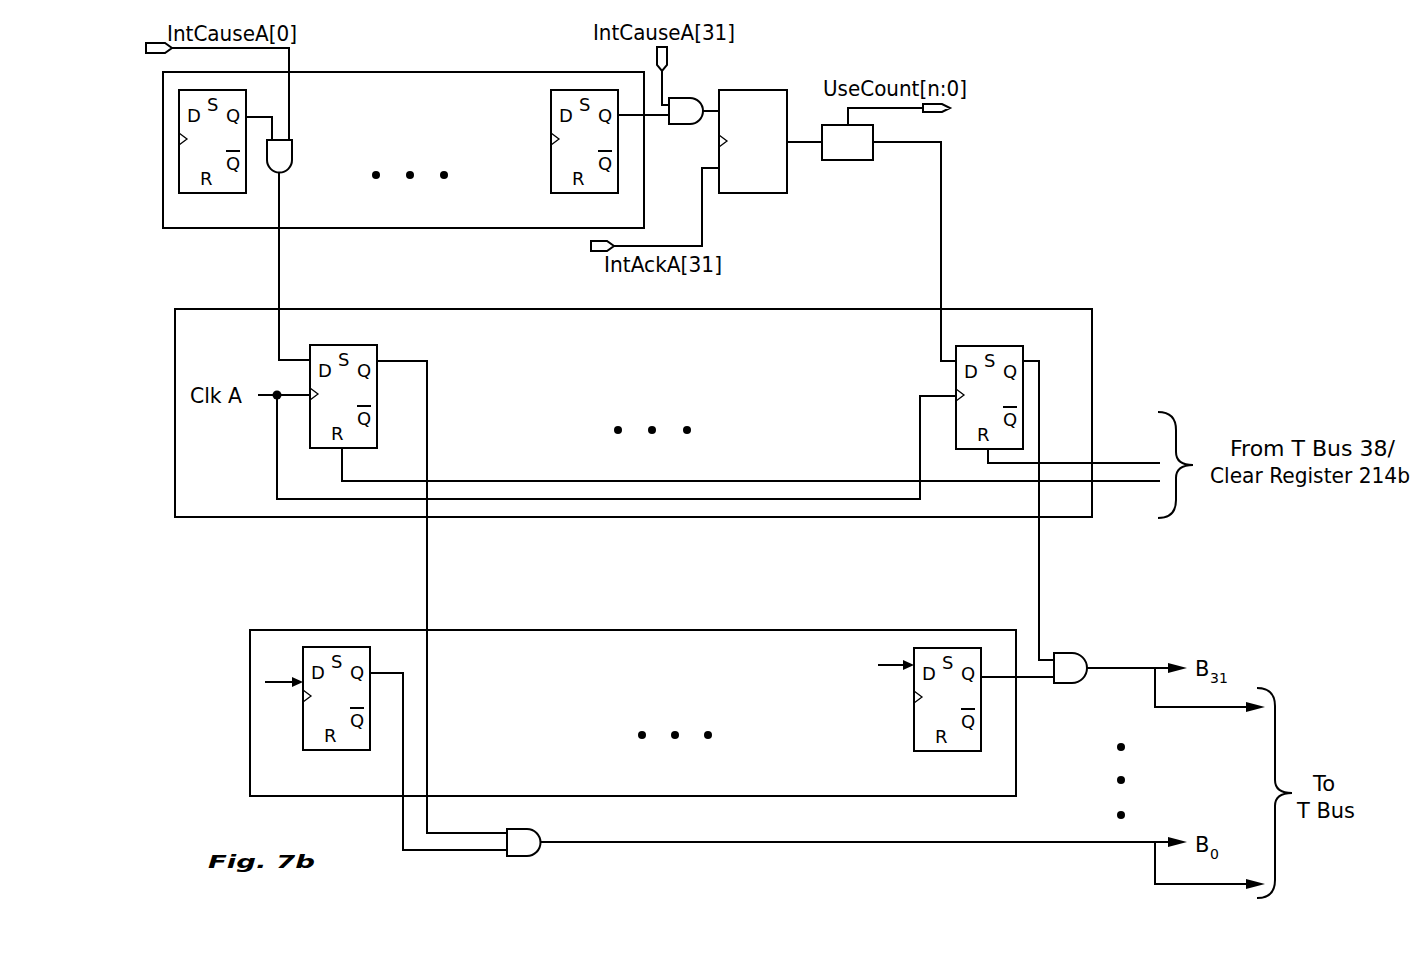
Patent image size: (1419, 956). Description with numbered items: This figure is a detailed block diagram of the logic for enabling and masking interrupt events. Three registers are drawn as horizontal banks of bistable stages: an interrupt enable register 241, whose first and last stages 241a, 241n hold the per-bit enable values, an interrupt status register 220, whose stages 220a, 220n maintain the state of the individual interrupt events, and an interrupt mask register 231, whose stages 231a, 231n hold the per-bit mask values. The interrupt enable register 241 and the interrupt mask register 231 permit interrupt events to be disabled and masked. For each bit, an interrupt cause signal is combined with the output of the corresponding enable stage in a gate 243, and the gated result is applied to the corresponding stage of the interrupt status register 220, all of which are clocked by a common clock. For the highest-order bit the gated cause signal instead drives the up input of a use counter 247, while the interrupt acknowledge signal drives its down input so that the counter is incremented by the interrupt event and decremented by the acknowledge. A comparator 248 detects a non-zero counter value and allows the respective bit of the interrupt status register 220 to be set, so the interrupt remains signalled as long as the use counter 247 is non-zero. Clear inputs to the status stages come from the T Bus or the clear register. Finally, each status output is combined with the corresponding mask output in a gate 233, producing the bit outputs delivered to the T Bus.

The interrupt enable register 241 is at (428, 159).
The interrupt enable flip-flop IntEnA[0] 241a is at (240, 143).
The interrupt enable flip-flop IntEnA[31] 241n is at (612, 143).
The AND gate 243 is at (293, 146).
The use counter 247 is at (745, 194).
The comparator 248 is at (848, 160).
The interrupt status register 220 is at (668, 403).
The interrupt status flip-flop IntStateA[0] 220a is at (371, 398).
The interrupt status flip-flop IntStateA[31] 220n is at (1017, 399).
The interrupt mask register 231 is at (694, 707).
The interrupt mask flip-flop IntMaskA[0] 231a is at (364, 700).
The interrupt mask flip-flop IntMaskA[31] 231n is at (975, 701).
The AND gate 233 is at (1068, 684).